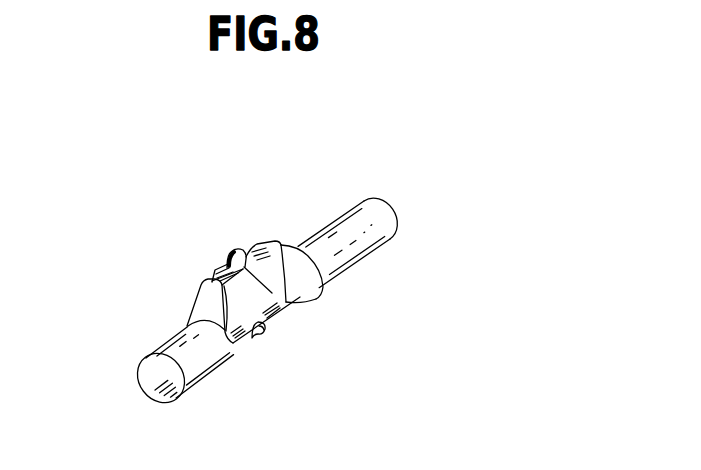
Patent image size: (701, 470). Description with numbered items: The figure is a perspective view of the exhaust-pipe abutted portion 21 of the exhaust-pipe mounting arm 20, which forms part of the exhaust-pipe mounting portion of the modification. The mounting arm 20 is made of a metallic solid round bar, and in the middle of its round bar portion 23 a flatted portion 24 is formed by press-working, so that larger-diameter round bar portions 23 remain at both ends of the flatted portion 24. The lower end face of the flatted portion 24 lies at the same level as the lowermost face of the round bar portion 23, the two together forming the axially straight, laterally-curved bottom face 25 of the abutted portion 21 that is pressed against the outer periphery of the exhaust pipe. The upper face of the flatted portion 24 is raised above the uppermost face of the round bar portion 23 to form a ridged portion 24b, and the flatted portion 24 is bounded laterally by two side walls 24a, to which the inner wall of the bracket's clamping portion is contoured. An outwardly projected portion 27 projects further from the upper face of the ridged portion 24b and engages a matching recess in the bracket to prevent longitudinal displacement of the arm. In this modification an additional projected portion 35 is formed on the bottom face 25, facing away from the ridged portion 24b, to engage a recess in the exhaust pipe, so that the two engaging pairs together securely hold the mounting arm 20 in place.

The exhaust-pipe mounting arm 20 is at (370, 186).
The exhaust-pipe abutted portion 21 is at (199, 380).
The round bar portion 23 is at (372, 253).
The flatted portion 24 is at (272, 293).
The side walls 24a is at (237, 302).
The ridged portion 24b is at (215, 272).
The bottom face 25 is at (263, 334).
The outwardly projected portion 27 is at (240, 255).
The additional projected portion 35 is at (266, 333).